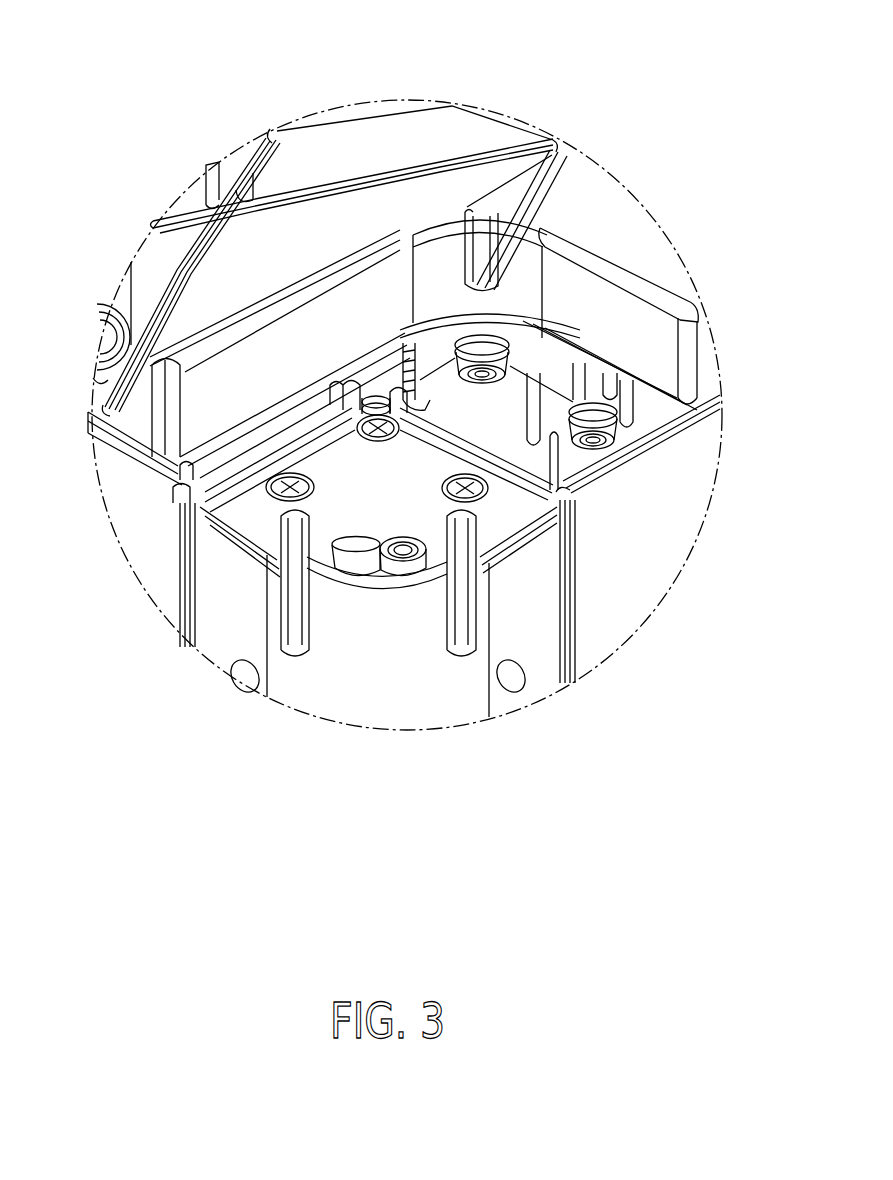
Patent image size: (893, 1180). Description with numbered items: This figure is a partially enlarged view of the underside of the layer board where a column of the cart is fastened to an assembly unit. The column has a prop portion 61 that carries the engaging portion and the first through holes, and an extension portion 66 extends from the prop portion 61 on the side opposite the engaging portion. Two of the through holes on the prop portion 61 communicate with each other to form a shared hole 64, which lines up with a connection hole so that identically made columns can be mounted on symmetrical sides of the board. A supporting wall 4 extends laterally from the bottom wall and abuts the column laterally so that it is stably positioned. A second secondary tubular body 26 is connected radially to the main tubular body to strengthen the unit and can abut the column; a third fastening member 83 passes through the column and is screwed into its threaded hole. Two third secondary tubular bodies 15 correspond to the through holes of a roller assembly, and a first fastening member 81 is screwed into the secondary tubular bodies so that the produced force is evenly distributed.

The supporting wall 4 is at (237, 455).
The third secondary tubular body 15 is at (484, 340).
The second secondary tubular body 26 is at (380, 372).
The prop portion 61 is at (497, 508).
The shared hole 64 is at (365, 553).
The extension portion 66 is at (547, 572).
The first fastening member 81 is at (273, 488).
The third fastening member 83 is at (362, 425).